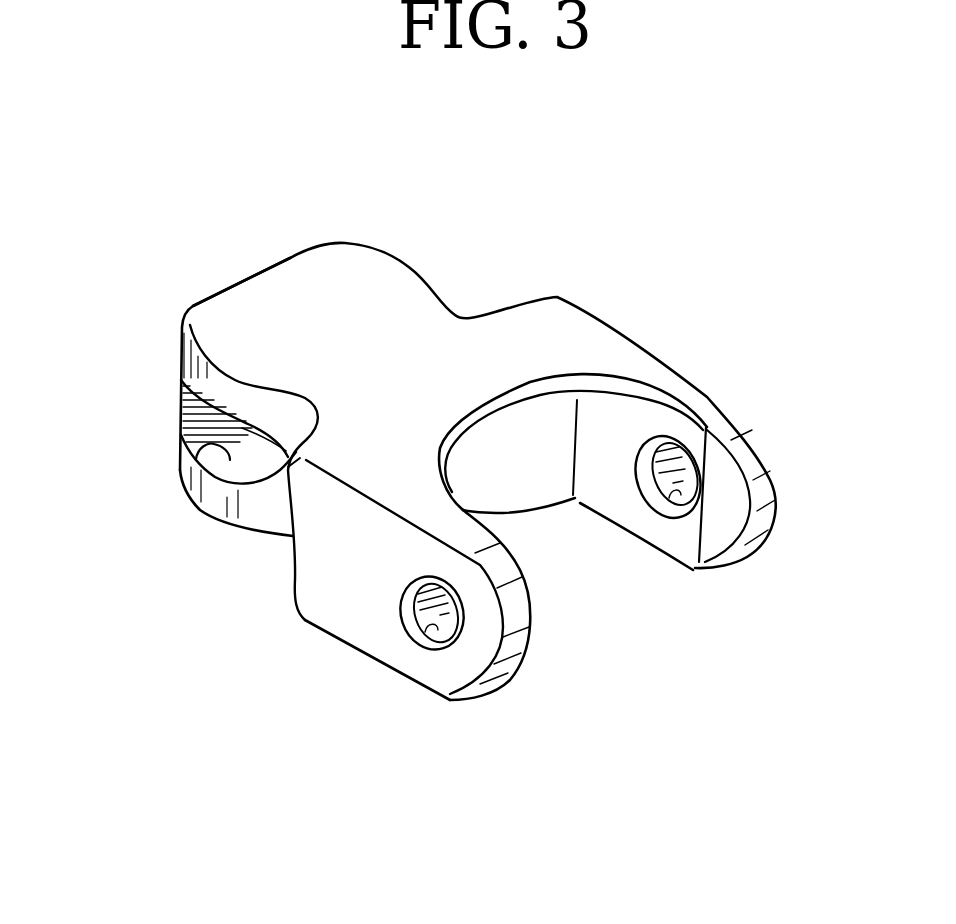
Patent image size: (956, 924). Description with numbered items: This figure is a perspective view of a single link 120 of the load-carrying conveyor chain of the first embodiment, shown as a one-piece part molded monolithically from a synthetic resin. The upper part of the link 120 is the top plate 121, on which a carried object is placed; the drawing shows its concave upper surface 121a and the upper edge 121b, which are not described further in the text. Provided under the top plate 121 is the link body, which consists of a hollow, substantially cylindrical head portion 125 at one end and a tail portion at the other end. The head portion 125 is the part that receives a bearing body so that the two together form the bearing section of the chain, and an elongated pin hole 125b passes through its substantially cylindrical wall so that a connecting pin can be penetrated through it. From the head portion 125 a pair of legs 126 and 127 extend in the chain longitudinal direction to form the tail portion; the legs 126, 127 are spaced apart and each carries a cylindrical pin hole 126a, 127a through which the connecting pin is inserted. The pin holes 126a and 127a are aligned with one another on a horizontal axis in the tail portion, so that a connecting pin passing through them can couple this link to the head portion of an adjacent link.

The link 120 is at (638, 307).
The top plate 121 is at (377, 360).
The concave surface 121a is at (195, 375).
The upper edge 121b is at (238, 283).
The head portion 125 is at (226, 504).
The pin hole 125b is at (181, 475).
The leg 126 is at (464, 670).
The pin hole 126a is at (437, 620).
The leg 127 is at (730, 522).
The pin hole 127a is at (697, 488).